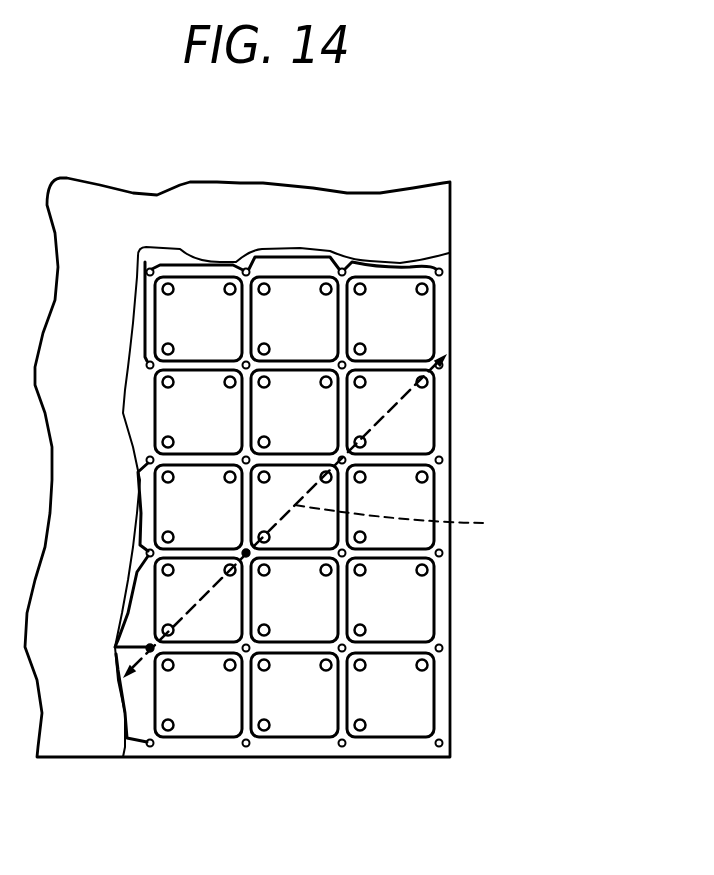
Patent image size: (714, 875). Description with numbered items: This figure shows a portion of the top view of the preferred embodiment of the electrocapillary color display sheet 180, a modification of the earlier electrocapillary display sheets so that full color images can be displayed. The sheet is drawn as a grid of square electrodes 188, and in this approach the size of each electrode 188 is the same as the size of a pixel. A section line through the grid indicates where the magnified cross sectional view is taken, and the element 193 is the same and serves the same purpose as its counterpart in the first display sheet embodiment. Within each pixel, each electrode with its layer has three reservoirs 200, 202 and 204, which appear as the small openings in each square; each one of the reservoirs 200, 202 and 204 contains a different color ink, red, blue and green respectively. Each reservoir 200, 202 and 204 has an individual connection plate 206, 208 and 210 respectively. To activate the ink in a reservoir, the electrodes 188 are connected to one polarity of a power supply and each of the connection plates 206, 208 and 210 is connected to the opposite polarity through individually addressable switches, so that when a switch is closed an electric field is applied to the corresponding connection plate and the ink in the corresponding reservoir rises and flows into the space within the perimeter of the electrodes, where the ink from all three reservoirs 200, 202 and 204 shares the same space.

The electrocapillary color display sheet 180 is at (260, 150).
The electrode 188 is at (477, 401).
The element 193 is at (443, 744).
The reservoir 200 is at (513, 367).
The connection plate 206 is at (422, 381).
The reservoir 202 is at (475, 337).
The connection plate 208 is at (362, 381).
The reservoir 204 is at (479, 417).
The connection plate 210 is at (362, 442).